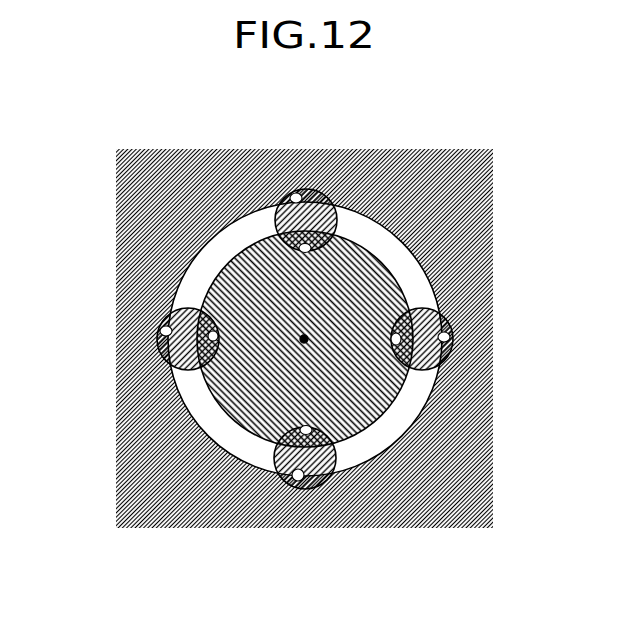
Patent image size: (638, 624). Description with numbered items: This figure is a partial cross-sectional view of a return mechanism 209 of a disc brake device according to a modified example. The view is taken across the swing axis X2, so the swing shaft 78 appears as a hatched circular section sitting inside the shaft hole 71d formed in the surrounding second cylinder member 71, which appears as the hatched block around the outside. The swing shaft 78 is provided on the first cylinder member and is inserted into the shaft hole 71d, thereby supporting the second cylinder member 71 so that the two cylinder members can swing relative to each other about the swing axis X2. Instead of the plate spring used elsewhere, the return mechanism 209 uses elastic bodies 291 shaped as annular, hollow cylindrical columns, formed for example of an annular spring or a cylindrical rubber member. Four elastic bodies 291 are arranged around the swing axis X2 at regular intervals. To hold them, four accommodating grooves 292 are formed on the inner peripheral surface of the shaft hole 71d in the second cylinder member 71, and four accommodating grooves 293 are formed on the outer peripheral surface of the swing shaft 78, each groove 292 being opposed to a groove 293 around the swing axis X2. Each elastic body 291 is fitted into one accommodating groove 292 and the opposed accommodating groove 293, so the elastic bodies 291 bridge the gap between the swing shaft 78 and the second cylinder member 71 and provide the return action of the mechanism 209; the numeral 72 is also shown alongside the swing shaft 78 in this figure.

The return mechanism 209 is at (128, 187).
The second cylinder member 71 is at (166, 158).
The shaft hole 71d is at (189, 411).
The swing shaft 78 is at (333, 402).
The rotor 72 is at (355, 400).
The elastic body 291 is at (307, 182).
The accommodating groove 292 is at (282, 185).
The accommodating groove 293 is at (298, 246).
The swing axis X2 is at (301, 331).